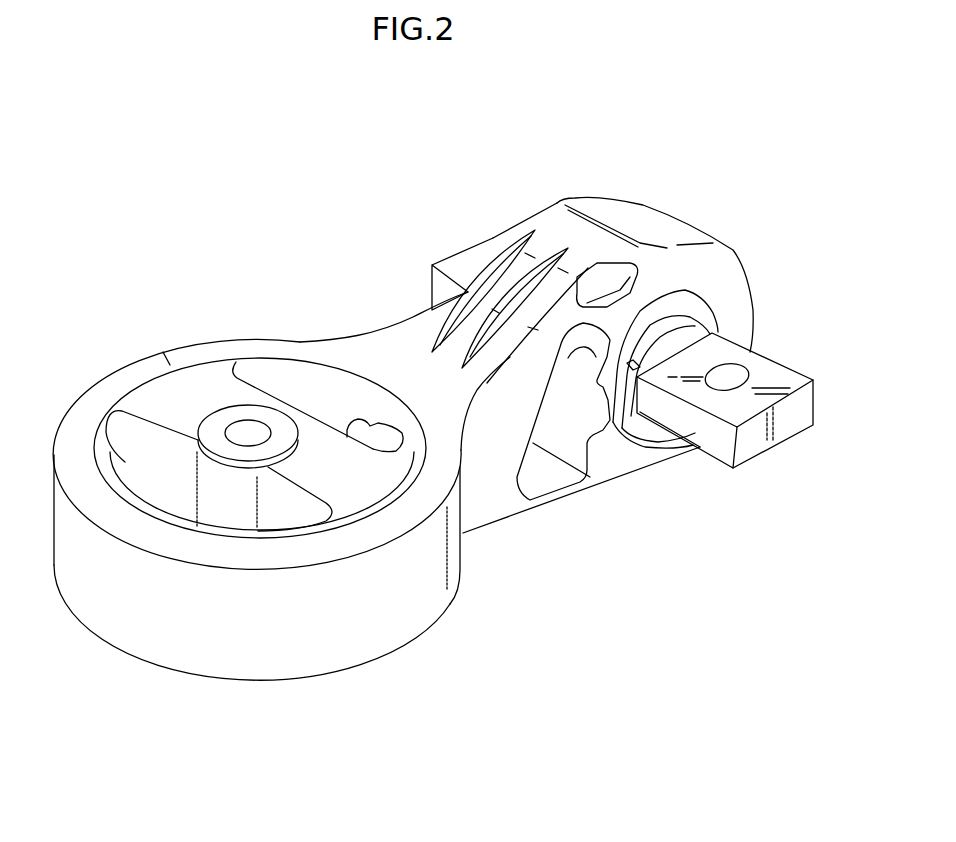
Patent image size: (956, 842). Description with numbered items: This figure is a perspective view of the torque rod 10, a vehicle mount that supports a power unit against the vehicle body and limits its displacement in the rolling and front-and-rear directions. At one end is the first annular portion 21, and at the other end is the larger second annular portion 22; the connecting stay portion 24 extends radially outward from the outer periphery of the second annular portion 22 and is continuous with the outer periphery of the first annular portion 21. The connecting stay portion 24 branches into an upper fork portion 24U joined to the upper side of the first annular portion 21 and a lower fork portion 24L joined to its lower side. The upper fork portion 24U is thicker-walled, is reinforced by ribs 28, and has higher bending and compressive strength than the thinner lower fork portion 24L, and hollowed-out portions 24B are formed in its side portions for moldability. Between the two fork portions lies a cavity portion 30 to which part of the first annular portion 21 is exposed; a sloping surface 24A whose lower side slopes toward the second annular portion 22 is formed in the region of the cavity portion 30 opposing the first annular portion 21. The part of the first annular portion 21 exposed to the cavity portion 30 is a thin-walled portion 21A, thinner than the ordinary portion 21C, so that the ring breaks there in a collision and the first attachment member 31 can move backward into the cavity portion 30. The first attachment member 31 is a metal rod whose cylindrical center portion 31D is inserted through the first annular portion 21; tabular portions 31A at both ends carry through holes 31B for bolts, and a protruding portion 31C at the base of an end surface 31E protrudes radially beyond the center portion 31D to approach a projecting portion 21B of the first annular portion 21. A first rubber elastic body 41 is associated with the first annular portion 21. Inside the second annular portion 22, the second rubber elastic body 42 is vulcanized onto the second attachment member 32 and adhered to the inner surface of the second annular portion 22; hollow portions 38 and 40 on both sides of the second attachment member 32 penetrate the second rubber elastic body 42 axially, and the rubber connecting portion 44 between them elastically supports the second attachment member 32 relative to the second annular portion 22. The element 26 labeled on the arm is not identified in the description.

The torque rod 10 is at (265, 155).
The first annular portion 21 is at (687, 212).
The thin-walled portion 21A is at (550, 383).
The projecting portion 21B is at (630, 478).
The ordinary portion 21C is at (712, 300).
The second annular portion 22 is at (118, 368).
The connecting stay portion 24 is at (511, 532).
The sloping surface 24A is at (557, 435).
The hollowed-out portions 24B is at (637, 268).
The upper fork portion 24U is at (478, 242).
The lower fork portion 24L is at (595, 490).
The arm portion 26 is at (374, 312).
The ribs 28 is at (505, 248).
The cavity portion 30 is at (548, 470).
The first attachment member 31 is at (803, 443).
The tabular portions 31A is at (448, 268).
The through holes 31B is at (737, 378).
The protruding portion 31C is at (660, 465).
The center portion 31D is at (740, 292).
The end surface 31E is at (718, 445).
The second attachment member 32 is at (211, 413).
The hollow portion 38 is at (121, 457).
The hollow portion 40 is at (286, 377).
The first rubber elastic body 41 is at (688, 294).
The second rubber elastic body 42 is at (163, 354).
The rubber connecting portion 44 is at (383, 423).